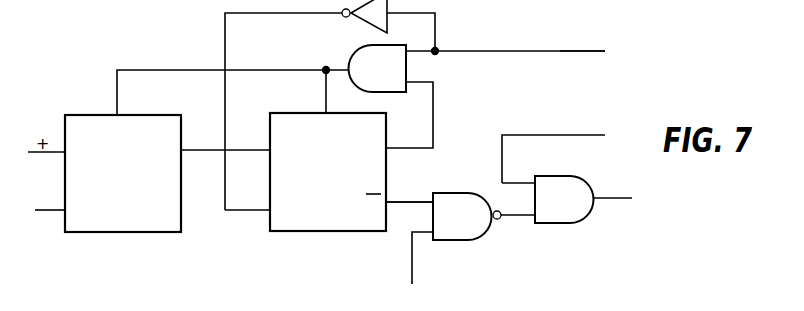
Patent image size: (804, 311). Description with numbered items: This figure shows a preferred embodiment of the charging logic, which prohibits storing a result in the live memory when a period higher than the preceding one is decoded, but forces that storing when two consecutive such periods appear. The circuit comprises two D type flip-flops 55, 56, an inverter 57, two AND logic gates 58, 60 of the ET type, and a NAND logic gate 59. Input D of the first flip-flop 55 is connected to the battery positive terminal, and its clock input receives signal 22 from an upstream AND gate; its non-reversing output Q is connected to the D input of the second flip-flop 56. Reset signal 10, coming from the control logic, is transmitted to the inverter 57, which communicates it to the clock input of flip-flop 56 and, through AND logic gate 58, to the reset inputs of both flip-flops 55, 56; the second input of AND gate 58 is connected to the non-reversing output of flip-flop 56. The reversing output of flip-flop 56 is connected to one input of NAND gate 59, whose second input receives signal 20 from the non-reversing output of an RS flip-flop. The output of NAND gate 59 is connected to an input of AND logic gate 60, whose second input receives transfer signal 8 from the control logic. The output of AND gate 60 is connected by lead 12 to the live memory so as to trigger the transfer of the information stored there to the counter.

The D type flip-flop 55 is at (144, 220).
The D type flip-flop 56 is at (330, 218).
The inverter 57 is at (363, 23).
The AND logic gate 58 is at (407, 65).
The NAND logic gate 59 is at (455, 206).
The AND logic gate 60 is at (578, 223).
The reset signal 10 is at (562, 51).
The transfer signal 8 is at (580, 123).
The lead 12 is at (610, 198).
The signal 20 is at (413, 273).
The signal 22 is at (40, 211).